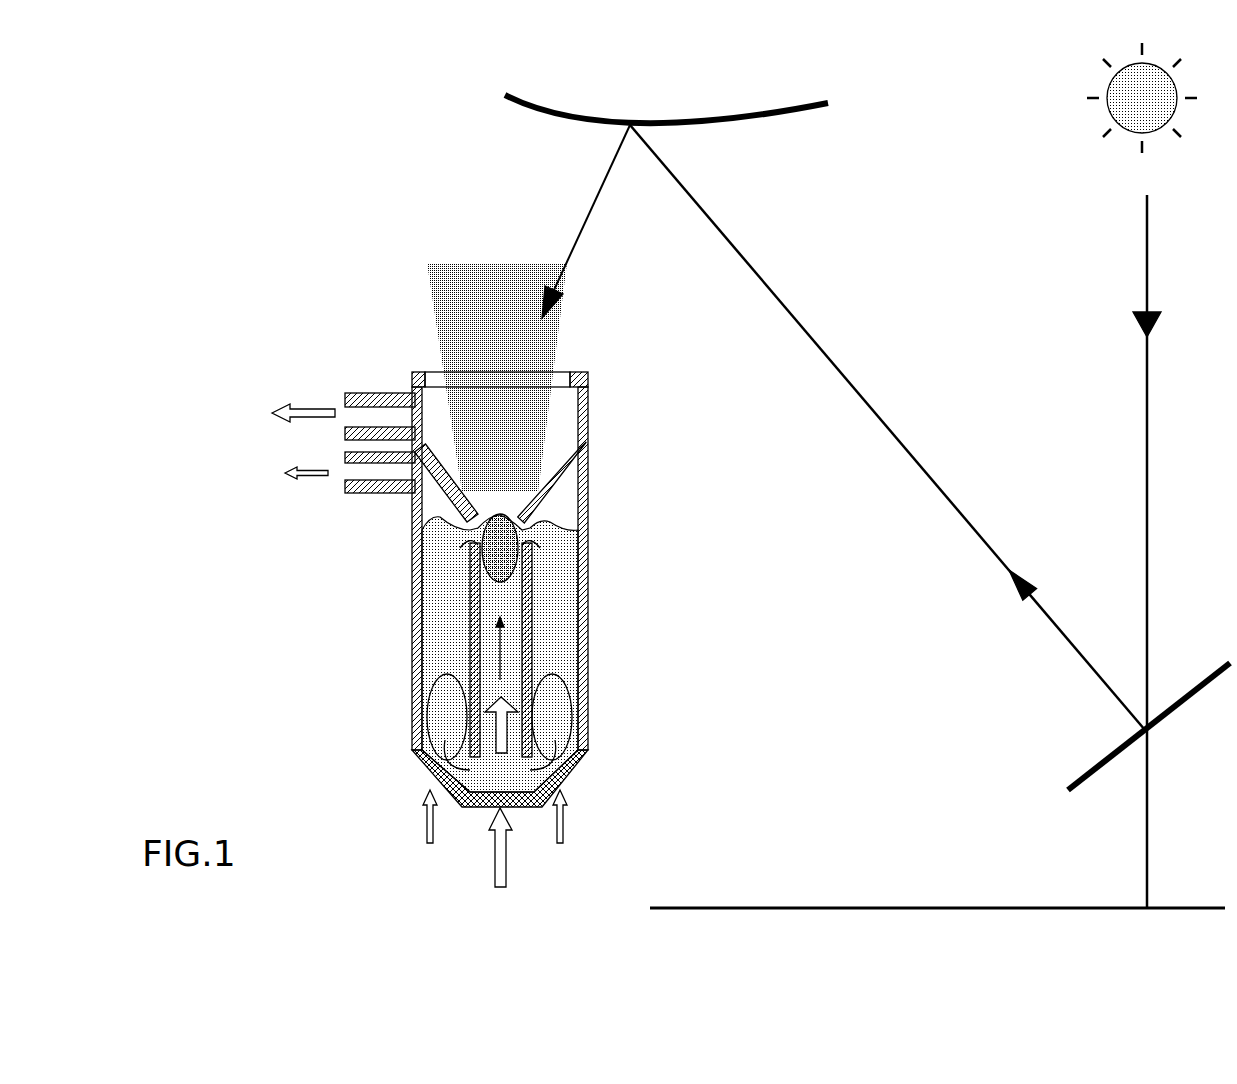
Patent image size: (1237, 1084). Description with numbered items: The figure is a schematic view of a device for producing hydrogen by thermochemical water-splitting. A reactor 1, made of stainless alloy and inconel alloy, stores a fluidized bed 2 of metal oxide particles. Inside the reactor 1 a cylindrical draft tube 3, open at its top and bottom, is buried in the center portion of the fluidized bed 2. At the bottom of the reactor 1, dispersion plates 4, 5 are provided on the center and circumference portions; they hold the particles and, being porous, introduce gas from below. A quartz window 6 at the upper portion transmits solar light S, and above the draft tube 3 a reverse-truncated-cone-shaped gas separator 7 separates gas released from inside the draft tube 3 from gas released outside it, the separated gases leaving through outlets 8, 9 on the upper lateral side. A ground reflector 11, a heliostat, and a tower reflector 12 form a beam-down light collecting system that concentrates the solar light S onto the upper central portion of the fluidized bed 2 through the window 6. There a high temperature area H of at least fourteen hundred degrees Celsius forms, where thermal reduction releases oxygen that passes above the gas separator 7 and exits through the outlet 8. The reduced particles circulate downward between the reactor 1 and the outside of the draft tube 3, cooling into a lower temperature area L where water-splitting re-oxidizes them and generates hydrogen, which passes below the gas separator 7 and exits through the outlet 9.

The reactor 1 is at (655, 517).
The fluidized bed 2 is at (437, 605).
The draft tube 3 is at (478, 612).
The dispersion plate 4 is at (483, 808).
The dispersion plate 5 is at (425, 776).
The quartz window 6 is at (562, 378).
The gas separator 7 is at (455, 475).
The outlet 8 is at (375, 393).
The outlet 9 is at (365, 495).
The ground reflector 11 is at (1170, 716).
The tower reflector 12 is at (720, 128).
The high temperature area H is at (520, 550).
The lower temperature area L is at (555, 718).
The solar light S is at (1155, 100).